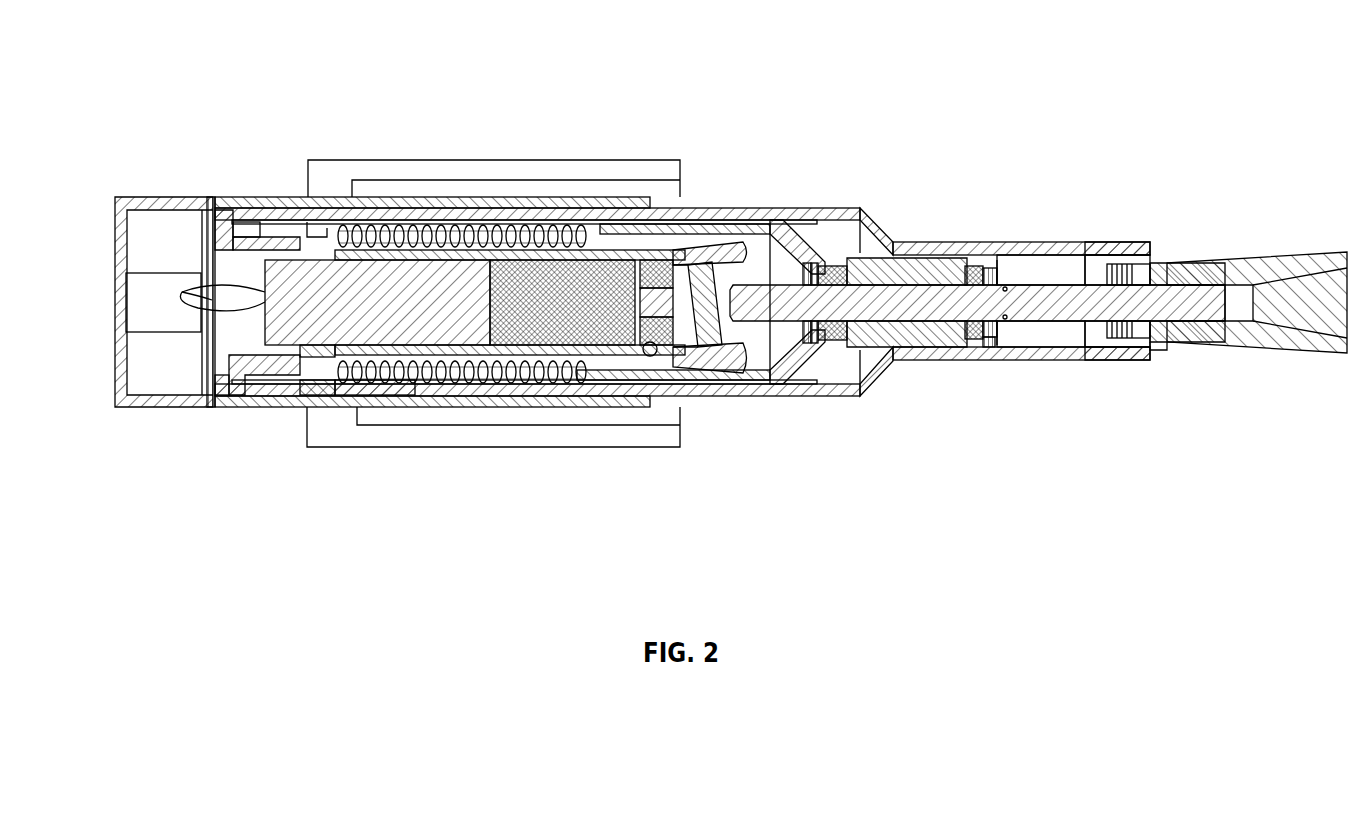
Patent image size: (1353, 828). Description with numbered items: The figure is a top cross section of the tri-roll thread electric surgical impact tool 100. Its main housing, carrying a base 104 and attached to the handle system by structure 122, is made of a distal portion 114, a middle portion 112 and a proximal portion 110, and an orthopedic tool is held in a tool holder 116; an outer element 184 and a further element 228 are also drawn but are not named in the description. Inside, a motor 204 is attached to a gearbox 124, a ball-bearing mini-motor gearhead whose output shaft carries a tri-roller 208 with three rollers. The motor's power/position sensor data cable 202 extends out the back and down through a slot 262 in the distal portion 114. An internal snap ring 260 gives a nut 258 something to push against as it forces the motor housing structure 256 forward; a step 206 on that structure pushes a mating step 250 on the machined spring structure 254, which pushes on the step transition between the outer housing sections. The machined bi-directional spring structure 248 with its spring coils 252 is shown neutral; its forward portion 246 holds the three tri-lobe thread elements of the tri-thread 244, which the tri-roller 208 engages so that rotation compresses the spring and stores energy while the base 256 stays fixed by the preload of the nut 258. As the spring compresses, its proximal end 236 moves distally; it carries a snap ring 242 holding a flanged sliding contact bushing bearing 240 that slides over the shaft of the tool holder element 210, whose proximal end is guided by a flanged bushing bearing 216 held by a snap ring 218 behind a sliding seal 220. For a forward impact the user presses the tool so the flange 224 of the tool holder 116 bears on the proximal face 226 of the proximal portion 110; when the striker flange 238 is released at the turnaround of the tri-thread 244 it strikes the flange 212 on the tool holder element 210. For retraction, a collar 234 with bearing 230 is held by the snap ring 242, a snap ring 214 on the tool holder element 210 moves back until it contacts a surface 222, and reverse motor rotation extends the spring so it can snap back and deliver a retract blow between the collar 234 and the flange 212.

The tri-roll thread electric surgical impact tool 100 is at (275, 630).
The base 104 is at (595, 190).
The proximal portion 110 is at (935, 243).
The middle portion 112 is at (756, 208).
The distal portion 114 is at (176, 197).
The tool holder 116 is at (1312, 263).
The structure 122 is at (420, 222).
The gearbox 124 is at (515, 275).
The outer shell 184 is at (453, 168).
The power/position sensor data cable 202 is at (182, 292).
The motor 204 is at (293, 275).
The step 206 is at (306, 222).
The tri-roller 208 is at (702, 272).
The tool holder element 210 is at (792, 285).
The flange 212 is at (880, 285).
The snap ring 214 is at (1005, 285).
The flanged bushing bearing 216 is at (1098, 270).
The snap ring 218 is at (1113, 268).
The sliding seal 220 is at (1160, 263).
The surface 222 is at (1085, 270).
The flange 224 is at (1167, 346).
The proximal face 226 is at (1135, 340).
The pin 228 is at (1005, 340).
The bearing 230 is at (990, 340).
The collar 234 is at (982, 347).
The proximal end 236 is at (918, 350).
The striker flange 238 is at (835, 343).
The flanged sliding contact bushing bearing 240 is at (815, 343).
The snap ring 242 is at (806, 343).
The tri-thread 244 is at (688, 372).
The forward portion 246 is at (598, 376).
The spring structure 248 is at (432, 392).
The mating step 250 is at (320, 395).
The spring coils 252 is at (366, 394).
The machined spring structure 254 is at (303, 395).
The motor housing structure 256 is at (272, 393).
The nut 258 is at (223, 395).
The internal snap ring 260 is at (209, 395).
The slot 262 is at (134, 315).